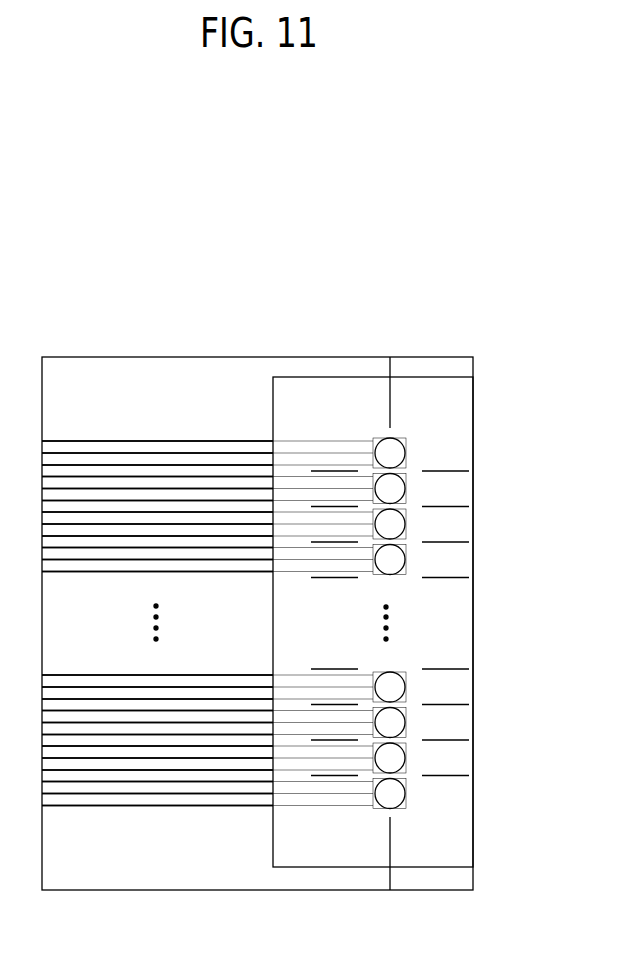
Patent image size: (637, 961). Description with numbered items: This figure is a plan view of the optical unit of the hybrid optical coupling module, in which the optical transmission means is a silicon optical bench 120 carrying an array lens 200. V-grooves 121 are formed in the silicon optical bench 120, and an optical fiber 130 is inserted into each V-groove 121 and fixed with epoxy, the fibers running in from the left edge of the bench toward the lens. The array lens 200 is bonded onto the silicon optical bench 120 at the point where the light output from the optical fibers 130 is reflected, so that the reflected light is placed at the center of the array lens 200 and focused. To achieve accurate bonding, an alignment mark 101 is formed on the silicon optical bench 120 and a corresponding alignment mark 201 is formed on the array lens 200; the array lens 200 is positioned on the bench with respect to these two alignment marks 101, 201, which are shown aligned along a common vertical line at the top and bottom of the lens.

The silicon optical bench 120 is at (78, 368).
The V-groove 121 is at (145, 438).
The optical fiber 130 is at (230, 448).
The alignment mark 101 is at (389, 365).
The array lens 200 is at (445, 822).
The alignment mark 201 is at (392, 400).